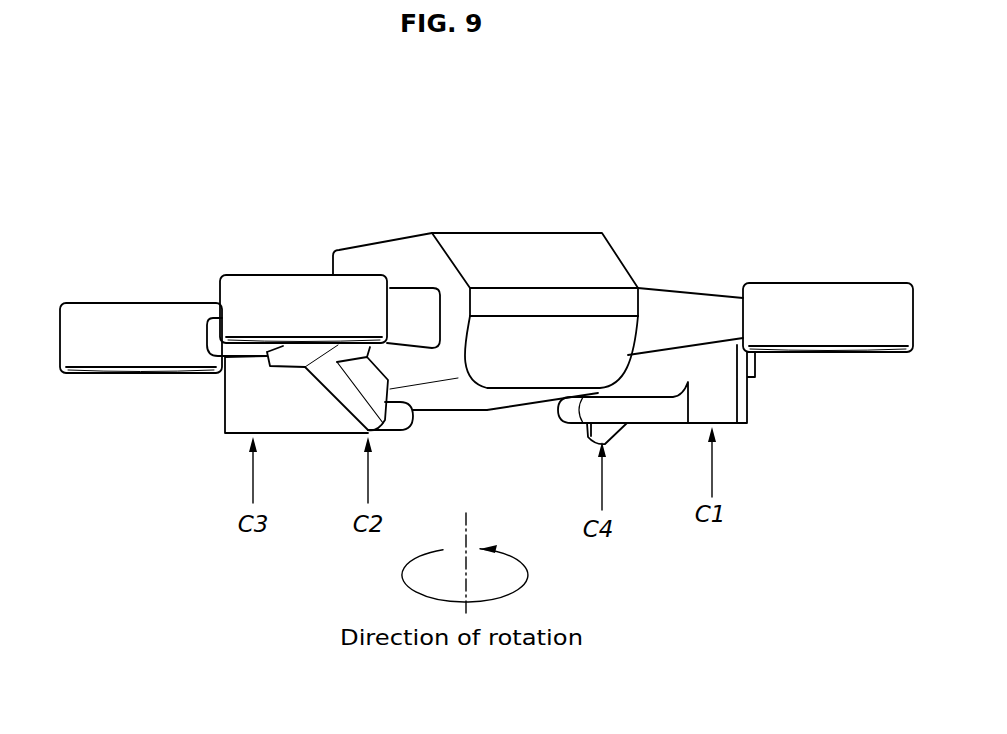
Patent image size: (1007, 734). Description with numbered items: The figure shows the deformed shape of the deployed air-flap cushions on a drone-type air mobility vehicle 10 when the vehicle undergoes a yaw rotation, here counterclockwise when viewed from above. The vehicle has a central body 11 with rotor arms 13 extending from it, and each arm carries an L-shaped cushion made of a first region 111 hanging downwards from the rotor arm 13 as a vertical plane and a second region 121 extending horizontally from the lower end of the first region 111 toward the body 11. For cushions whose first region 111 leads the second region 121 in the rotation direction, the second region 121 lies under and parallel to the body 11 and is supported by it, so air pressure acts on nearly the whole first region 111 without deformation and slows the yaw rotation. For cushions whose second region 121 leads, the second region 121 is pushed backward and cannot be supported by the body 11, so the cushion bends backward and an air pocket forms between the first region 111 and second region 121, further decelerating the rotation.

The drone-type air mobility vehicle 10 is at (449, 178).
The body 11 is at (541, 242).
The rotor arm 13 is at (410, 298).
The first region 111 is at (293, 362).
The second region 121 is at (348, 398).